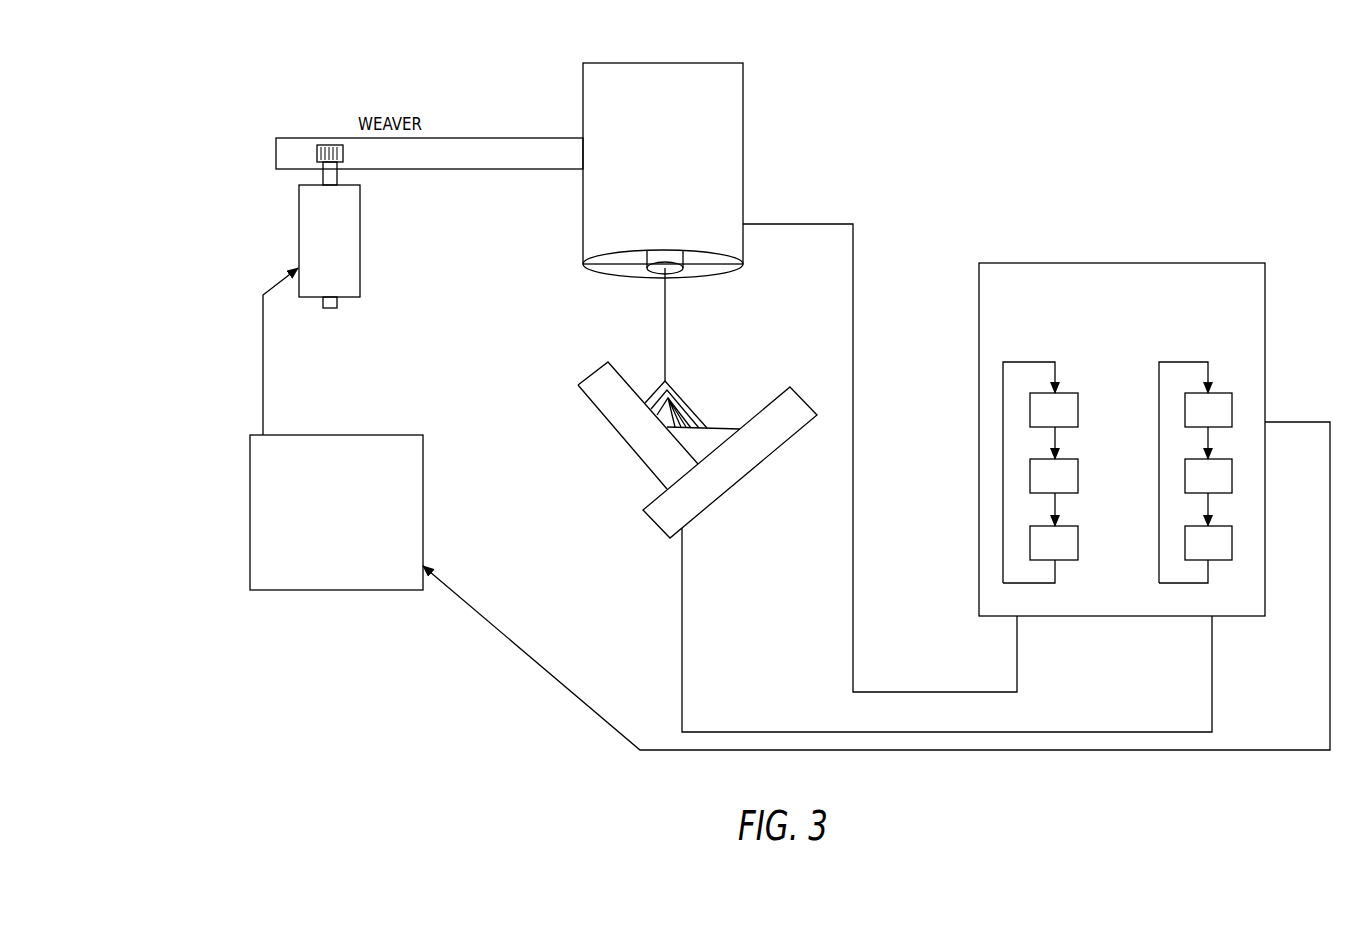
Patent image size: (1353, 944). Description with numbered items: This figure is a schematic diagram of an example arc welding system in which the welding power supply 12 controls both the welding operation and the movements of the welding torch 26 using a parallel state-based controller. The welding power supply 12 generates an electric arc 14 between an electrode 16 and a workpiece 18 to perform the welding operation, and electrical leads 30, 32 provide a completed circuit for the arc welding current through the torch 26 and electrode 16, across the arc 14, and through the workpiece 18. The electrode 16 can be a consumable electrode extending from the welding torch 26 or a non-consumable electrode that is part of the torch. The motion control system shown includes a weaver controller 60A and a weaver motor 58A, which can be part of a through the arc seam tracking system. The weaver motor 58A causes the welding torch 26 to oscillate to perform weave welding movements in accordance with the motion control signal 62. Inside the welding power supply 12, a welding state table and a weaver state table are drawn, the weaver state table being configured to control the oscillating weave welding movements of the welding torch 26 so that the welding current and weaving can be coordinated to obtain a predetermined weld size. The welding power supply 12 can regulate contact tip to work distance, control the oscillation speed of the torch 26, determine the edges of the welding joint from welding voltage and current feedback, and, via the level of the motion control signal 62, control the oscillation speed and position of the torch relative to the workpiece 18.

The welding power supply 12 is at (1108, 263).
The electric arc 14 is at (707, 393).
The electrode 16 is at (663, 320).
The workpiece 18 is at (645, 262).
The welding torch 26 is at (743, 100).
The electrical lead 30 is at (853, 484).
The electrical lead 32 is at (682, 657).
The weaver motor 58A is at (360, 217).
The weaver controller 60A is at (423, 452).
The motion control signal 62 is at (487, 616).